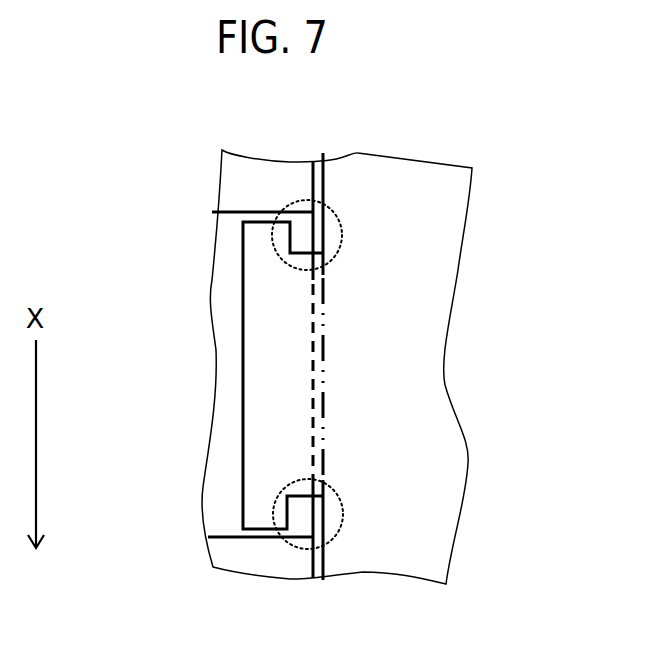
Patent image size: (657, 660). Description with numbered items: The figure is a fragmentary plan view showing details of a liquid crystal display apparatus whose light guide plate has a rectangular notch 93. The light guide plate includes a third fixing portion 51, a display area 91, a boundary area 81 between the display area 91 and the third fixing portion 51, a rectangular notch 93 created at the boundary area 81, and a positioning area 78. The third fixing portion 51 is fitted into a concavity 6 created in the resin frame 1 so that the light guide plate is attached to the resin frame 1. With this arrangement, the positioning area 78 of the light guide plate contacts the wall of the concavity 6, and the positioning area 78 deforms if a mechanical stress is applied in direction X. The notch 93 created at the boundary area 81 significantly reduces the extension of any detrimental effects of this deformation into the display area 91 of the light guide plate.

The resin frame 1 is at (263, 180).
The concavity 6 is at (227, 262).
The third fixing portion 51 is at (258, 413).
The positioning area 78 is at (255, 530).
The boundary area 81 is at (323, 388).
The display area 91 is at (427, 233).
The rectangular notch 93 is at (340, 248).